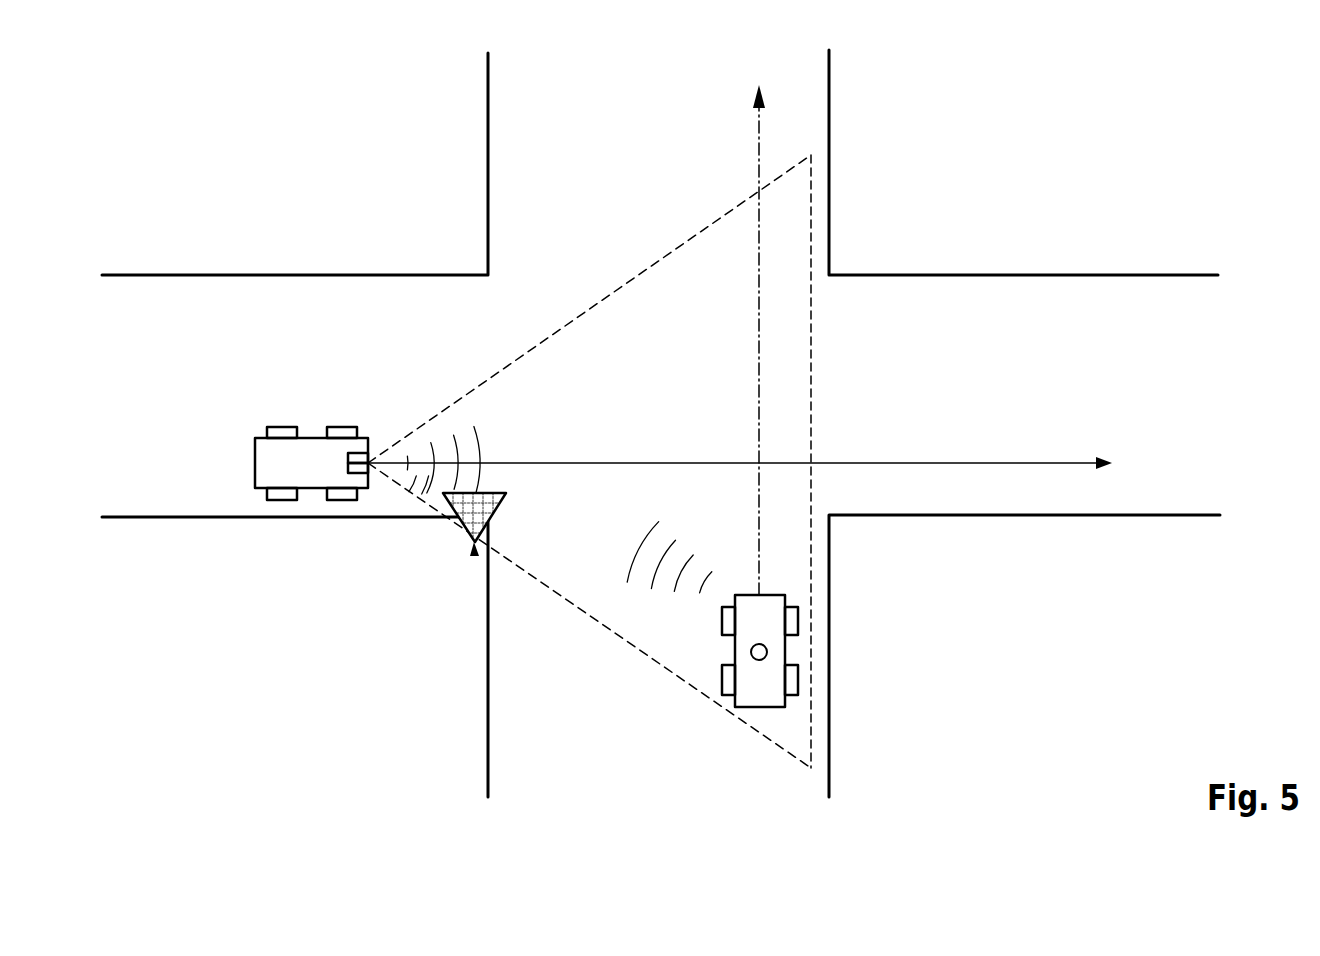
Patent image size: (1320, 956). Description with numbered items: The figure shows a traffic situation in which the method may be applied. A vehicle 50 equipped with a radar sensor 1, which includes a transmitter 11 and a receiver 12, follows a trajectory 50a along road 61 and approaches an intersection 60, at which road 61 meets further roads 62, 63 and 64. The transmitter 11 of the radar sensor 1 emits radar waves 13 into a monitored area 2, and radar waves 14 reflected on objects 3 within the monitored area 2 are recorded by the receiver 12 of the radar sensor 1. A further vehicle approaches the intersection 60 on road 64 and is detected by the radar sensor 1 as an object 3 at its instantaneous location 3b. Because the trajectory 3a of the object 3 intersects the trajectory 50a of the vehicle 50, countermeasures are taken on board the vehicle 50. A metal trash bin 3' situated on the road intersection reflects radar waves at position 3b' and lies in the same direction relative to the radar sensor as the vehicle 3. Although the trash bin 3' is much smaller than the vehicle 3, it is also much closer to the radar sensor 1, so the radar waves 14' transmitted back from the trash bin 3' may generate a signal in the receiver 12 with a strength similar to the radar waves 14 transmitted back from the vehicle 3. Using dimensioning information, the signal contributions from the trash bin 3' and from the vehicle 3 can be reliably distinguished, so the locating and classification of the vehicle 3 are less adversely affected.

The radar sensor 1 is at (345, 471).
The transmitter 11 is at (358, 452).
The receiver 12 is at (355, 476).
The radar waves 13 is at (481, 440).
The reflected radar waves 14 is at (643, 552).
The radar waves transmitted back from trash bin 14' is at (416, 433).
The monitored area 2 is at (813, 340).
The object 3 is at (791, 651).
The metal trash bin 3' is at (459, 538).
The trajectory of object 3a is at (757, 150).
The instantaneous location of vehicle 3b is at (812, 651).
The reflection position of trash bin 3b' is at (460, 589).
The vehicle 50 is at (312, 437).
The trajectory of vehicle 50a is at (990, 462).
The intersection 60 is at (970, 180).
The road 61 is at (137, 406).
The further road 62 is at (635, 115).
The further road 63 is at (1180, 406).
The further road 64 is at (635, 779).